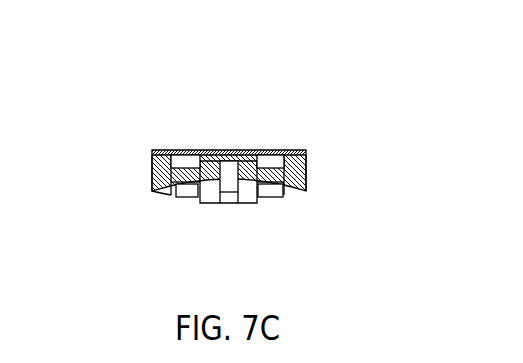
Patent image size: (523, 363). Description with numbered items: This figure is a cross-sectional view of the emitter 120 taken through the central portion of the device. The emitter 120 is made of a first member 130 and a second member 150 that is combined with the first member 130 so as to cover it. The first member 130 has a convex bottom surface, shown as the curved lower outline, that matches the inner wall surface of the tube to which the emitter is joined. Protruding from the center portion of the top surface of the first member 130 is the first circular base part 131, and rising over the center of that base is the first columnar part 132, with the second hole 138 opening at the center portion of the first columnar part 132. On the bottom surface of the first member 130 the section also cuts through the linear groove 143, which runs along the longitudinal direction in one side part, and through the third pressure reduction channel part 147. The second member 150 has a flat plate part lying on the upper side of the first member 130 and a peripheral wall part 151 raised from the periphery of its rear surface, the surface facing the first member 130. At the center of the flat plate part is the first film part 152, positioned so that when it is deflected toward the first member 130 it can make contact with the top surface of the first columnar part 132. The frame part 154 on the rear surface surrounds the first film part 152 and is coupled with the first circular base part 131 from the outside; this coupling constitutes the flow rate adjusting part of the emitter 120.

The emitter 120 is at (374, 87).
The first member 130 is at (307, 182).
The first circular base part 131 is at (190, 167).
The first columnar part 132 is at (252, 162).
The second hole 138 is at (223, 161).
The linear groove 143 is at (273, 202).
The third pressure reduction channel part 147 is at (192, 202).
The second member 150 is at (152, 177).
The peripheral wall part 151 is at (306, 192).
The first film part 152 is at (212, 161).
The frame part 154 is at (168, 198).